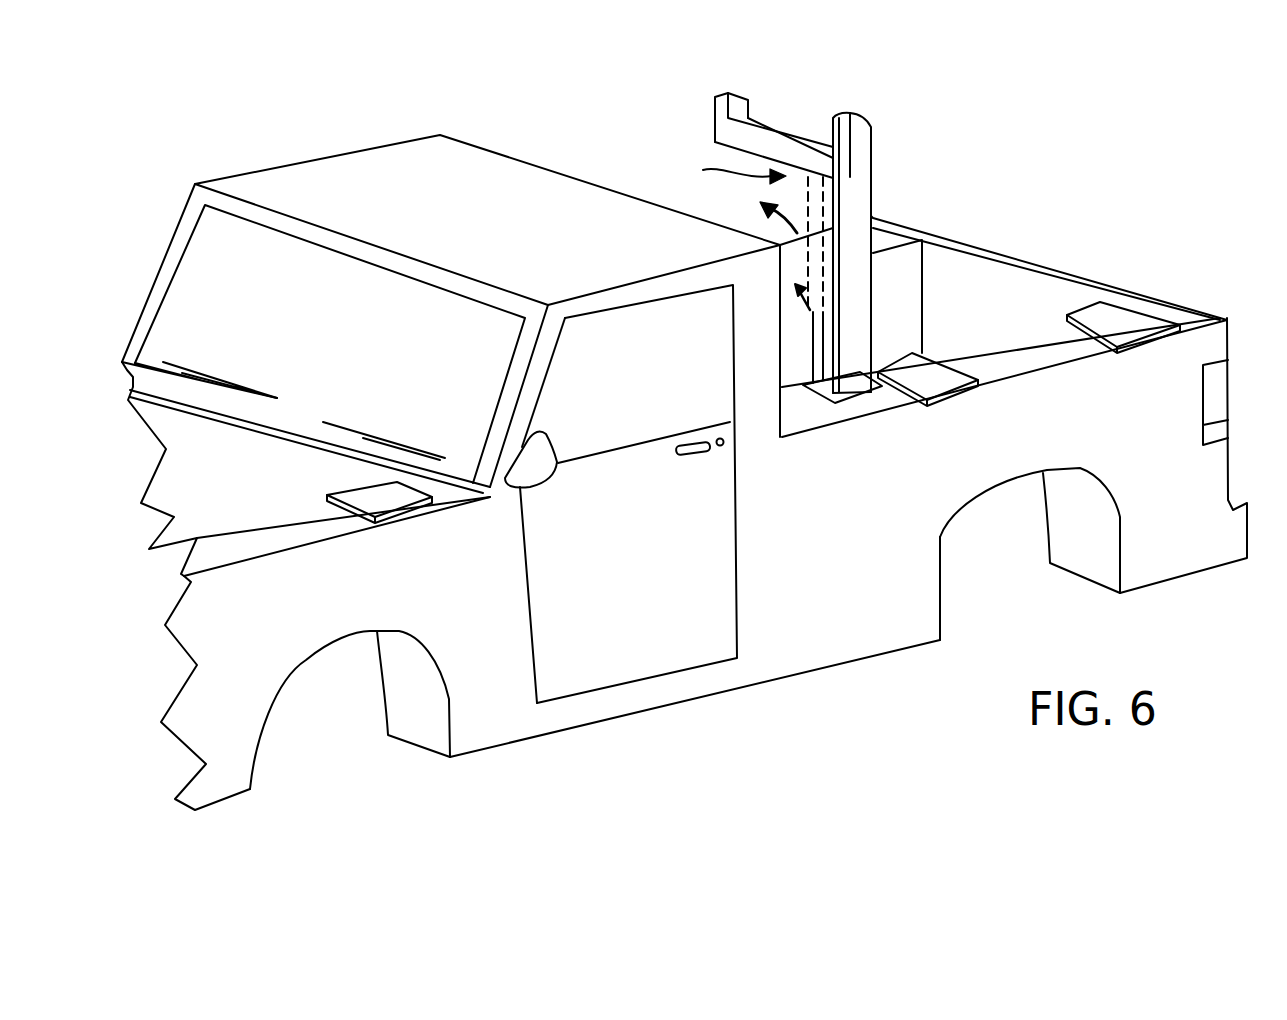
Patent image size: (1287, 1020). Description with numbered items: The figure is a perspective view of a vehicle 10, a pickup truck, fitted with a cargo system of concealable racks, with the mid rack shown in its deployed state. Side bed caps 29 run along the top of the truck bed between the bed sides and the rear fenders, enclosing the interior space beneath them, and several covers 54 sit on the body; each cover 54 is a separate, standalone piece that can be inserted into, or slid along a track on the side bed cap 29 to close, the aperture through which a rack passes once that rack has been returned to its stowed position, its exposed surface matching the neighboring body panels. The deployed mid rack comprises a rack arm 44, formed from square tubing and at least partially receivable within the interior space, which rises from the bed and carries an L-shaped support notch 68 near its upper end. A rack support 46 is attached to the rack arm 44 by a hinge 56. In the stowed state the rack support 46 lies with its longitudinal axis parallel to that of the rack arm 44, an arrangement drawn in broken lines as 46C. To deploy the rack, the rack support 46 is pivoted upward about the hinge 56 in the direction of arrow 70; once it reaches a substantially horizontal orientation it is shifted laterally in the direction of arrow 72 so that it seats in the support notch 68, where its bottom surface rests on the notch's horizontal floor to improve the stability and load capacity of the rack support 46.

The vehicle 10 is at (562, 138).
The side bed cap 29 is at (1027, 352).
The rack arm 44 is at (853, 330).
The rack support 46 is at (782, 128).
The rack support in stowed state 46C is at (807, 255).
The cover 54 is at (384, 492).
The hinge 56 is at (835, 162).
The support notch 68 is at (836, 142).
The arrow 70 is at (773, 224).
The arrow 72 is at (721, 168).